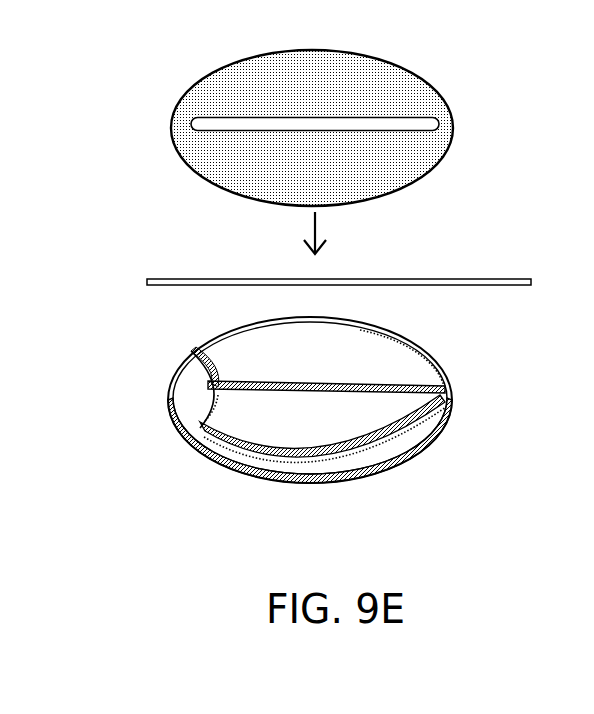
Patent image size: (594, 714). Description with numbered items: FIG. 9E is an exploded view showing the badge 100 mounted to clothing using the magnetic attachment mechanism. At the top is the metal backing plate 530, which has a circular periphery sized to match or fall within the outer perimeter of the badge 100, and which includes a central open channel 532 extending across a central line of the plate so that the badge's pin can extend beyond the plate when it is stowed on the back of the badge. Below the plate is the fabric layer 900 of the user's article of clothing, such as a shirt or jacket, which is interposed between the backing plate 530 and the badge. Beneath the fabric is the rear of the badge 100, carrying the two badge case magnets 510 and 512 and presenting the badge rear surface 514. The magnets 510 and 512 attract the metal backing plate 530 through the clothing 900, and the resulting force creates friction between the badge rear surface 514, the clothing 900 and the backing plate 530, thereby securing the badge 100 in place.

The badge 100 is at (382, 470).
The badge case magnet 510 is at (228, 361).
The badge case magnet 512 is at (242, 425).
The badge rear surface 514 is at (360, 353).
The metal backing plate 530 is at (237, 87).
The central open channel 532 is at (192, 123).
The fabric layer 900 is at (217, 279).